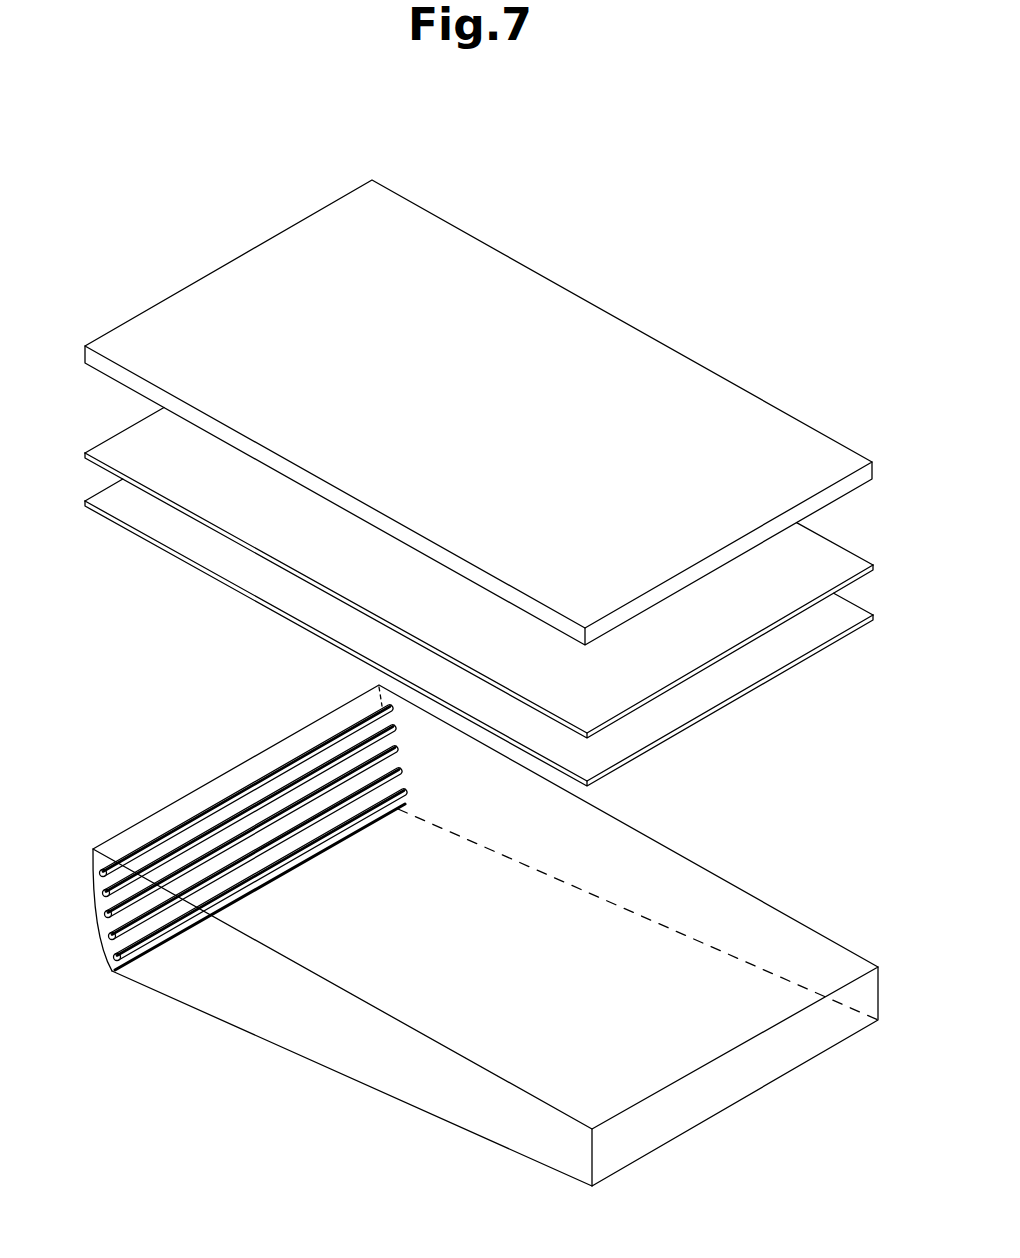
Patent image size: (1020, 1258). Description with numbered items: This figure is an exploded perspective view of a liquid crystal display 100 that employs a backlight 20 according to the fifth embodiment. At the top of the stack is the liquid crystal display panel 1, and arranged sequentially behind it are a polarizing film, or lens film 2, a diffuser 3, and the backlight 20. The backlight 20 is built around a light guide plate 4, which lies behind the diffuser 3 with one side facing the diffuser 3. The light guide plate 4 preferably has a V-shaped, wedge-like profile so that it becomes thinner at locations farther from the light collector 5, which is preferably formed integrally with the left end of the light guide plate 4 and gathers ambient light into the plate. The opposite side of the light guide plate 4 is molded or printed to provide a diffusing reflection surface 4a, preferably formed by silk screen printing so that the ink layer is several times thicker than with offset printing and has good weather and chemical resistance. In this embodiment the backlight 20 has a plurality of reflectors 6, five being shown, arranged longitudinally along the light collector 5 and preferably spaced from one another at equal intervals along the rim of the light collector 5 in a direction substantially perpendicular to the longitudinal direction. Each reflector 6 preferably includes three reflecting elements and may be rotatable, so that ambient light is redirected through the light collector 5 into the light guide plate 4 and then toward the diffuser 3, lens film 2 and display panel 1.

The liquid crystal display 100 is at (203, 177).
The liquid crystal display panel 1 is at (744, 425).
The lens film 2 is at (855, 562).
The diffuser 3 is at (855, 612).
The light guide plate 4 is at (335, 1050).
The diffusing reflection surface 4a is at (502, 1147).
The backlight 20 is at (74, 921).
The light collector 5 is at (97, 863).
The reflector 6 is at (110, 944).